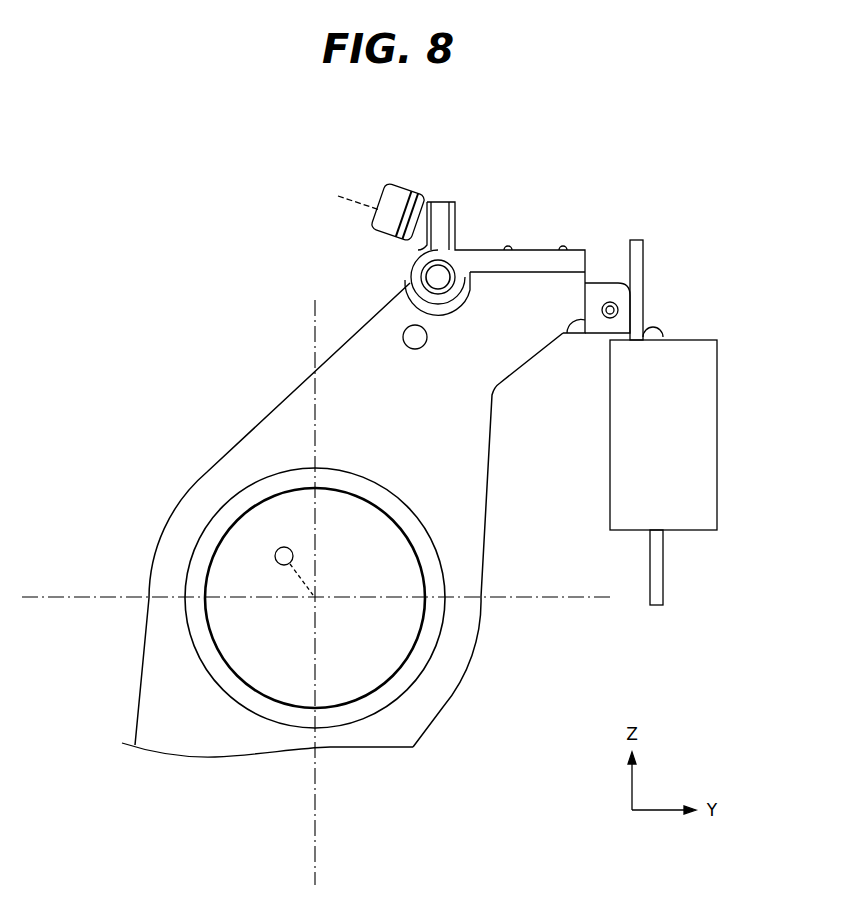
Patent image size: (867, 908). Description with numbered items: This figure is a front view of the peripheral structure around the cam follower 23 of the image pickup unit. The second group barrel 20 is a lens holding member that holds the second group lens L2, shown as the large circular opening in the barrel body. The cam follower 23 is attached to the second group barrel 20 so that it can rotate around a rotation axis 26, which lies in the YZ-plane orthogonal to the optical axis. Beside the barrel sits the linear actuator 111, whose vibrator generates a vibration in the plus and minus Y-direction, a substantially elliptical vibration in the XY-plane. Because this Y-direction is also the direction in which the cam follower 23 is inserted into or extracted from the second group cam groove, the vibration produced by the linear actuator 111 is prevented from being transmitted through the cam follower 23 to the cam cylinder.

The second group barrel 20 is at (208, 470).
The cam follower 23 is at (396, 188).
The rotation axis 26 is at (460, 230).
The linear actuator 111 is at (690, 340).
The second group lens L2 is at (393, 657).